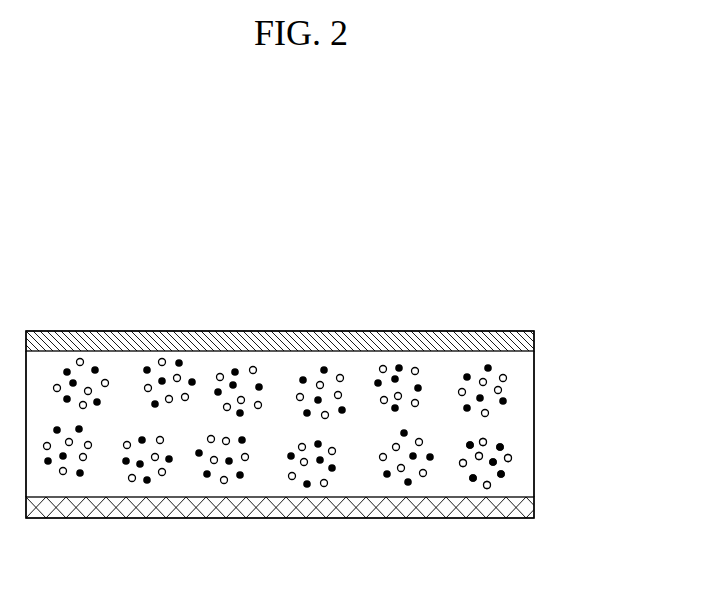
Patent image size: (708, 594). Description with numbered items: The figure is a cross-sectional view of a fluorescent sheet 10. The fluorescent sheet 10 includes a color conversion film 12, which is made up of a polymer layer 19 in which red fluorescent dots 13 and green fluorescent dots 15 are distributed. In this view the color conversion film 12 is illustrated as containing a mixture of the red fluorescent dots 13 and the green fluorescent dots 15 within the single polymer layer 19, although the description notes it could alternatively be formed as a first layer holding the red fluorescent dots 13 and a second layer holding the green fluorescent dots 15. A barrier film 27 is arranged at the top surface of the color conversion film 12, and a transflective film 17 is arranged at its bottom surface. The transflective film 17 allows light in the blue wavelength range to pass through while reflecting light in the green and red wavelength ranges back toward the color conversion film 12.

The fluorescent sheet 10 is at (441, 273).
The barrier film 27 is at (268, 333).
The transflective film 17 is at (273, 519).
The color conversion film 12 is at (605, 382).
The red fluorescent dots 13 is at (507, 378).
The green fluorescent dots 15 is at (504, 404).
The polymer layer 19 is at (518, 476).